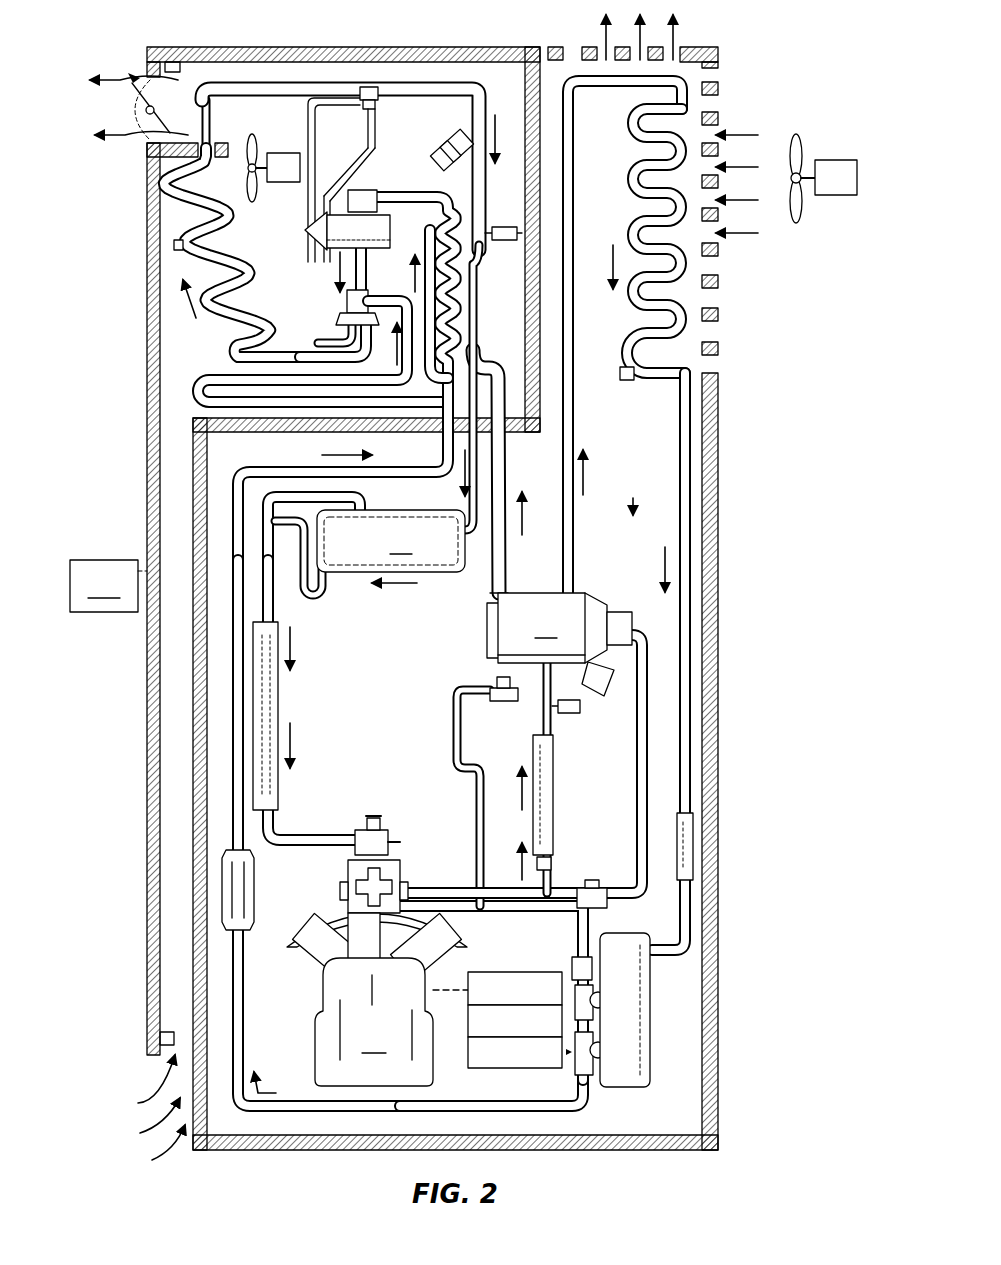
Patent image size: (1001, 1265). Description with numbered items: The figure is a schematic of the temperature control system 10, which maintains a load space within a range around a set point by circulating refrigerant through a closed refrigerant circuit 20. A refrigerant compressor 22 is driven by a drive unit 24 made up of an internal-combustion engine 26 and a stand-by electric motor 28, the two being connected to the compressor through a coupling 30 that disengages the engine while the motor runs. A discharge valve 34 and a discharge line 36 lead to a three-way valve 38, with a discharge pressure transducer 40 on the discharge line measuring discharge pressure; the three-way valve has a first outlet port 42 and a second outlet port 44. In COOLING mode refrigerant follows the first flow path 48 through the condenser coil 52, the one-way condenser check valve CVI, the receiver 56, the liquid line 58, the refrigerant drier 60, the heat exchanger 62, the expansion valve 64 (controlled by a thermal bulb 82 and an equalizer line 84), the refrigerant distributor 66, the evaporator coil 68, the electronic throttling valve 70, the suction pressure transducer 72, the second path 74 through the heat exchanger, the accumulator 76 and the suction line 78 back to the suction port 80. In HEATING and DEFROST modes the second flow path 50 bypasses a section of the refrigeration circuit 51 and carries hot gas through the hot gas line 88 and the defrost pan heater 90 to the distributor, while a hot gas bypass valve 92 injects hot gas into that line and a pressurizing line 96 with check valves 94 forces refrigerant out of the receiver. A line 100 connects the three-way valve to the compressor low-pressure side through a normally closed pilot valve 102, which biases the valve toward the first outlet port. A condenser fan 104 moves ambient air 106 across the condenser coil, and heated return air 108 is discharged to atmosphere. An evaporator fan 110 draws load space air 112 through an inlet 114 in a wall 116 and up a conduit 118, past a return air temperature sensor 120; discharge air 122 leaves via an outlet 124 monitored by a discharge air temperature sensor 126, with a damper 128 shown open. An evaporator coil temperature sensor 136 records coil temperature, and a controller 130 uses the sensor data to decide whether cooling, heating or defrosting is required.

The temperature control system 10 is at (775, 85).
The closed refrigerant circuit 20 is at (437, 620).
The refrigerant compressor 22 is at (377, 999).
The drive unit 24 is at (455, 978).
The internal-combustion engine 26 is at (500, 1070).
The stand-by electric motor 28 is at (530, 972).
The coupling 30 is at (468, 1025).
The discharge valve 34 is at (360, 877).
The discharge line 36 is at (410, 888).
The three-way valve 38 is at (559, 644).
The discharge pressure transducer 40 is at (580, 713).
The first outlet port 42 is at (575, 592).
The second outlet port 44 is at (512, 590).
The first flow path 48 is at (496, 130).
The second flow path 50 is at (395, 345).
The section of the refrigeration circuit 51 is at (636, 505).
The condenser coil 52 is at (628, 197).
The receiver 56 is at (640, 995).
The liquid line 58 is at (545, 1112).
The refrigerant drier 60 is at (252, 880).
The heat exchanger 62 is at (470, 335).
The expansion valve 64 is at (318, 250).
The refrigerant distributor 66 is at (345, 305).
The evaporator coil 68 is at (232, 222).
The electronic throttling valve 70 is at (440, 152).
The suction pressure transducer 72 is at (510, 227).
The second path through the heat exchanger 74 is at (462, 290).
The accumulator 76 is at (366, 546).
The suction line 78 is at (298, 830).
The suction port 80 is at (383, 820).
The thermal bulb 82 is at (350, 110).
The equalizer line 84 is at (376, 133).
The hot gas line 88 is at (510, 443).
The defrost pan heater 90 is at (210, 380).
The hot gas bypass valve 92 is at (505, 702).
The check valves 94 is at (593, 1005).
The pressurizing line 96 is at (455, 728).
The line 100 is at (638, 812).
The pilot valve 102 is at (594, 880).
The condenser fan 104 is at (845, 195).
The ambient air 106 is at (743, 200).
The return air 108 is at (672, 36).
The evaporator fan 110 is at (285, 183).
The load space air 112 is at (138, 1103).
The inlet 114 is at (149, 1154).
The wall 116 is at (160, 976).
The conduit 118 is at (170, 847).
The return air temperature sensor 120 is at (160, 1036).
The discharge air 122 is at (146, 110).
The outlet 124 is at (130, 72).
The discharge air temperature sensor 126 is at (173, 62).
The damper 128 is at (210, 117).
The controller 130 is at (108, 586).
The evaporator coil temperature sensor 136 is at (174, 245).
The one-way condenser check valve CVI is at (697, 832).